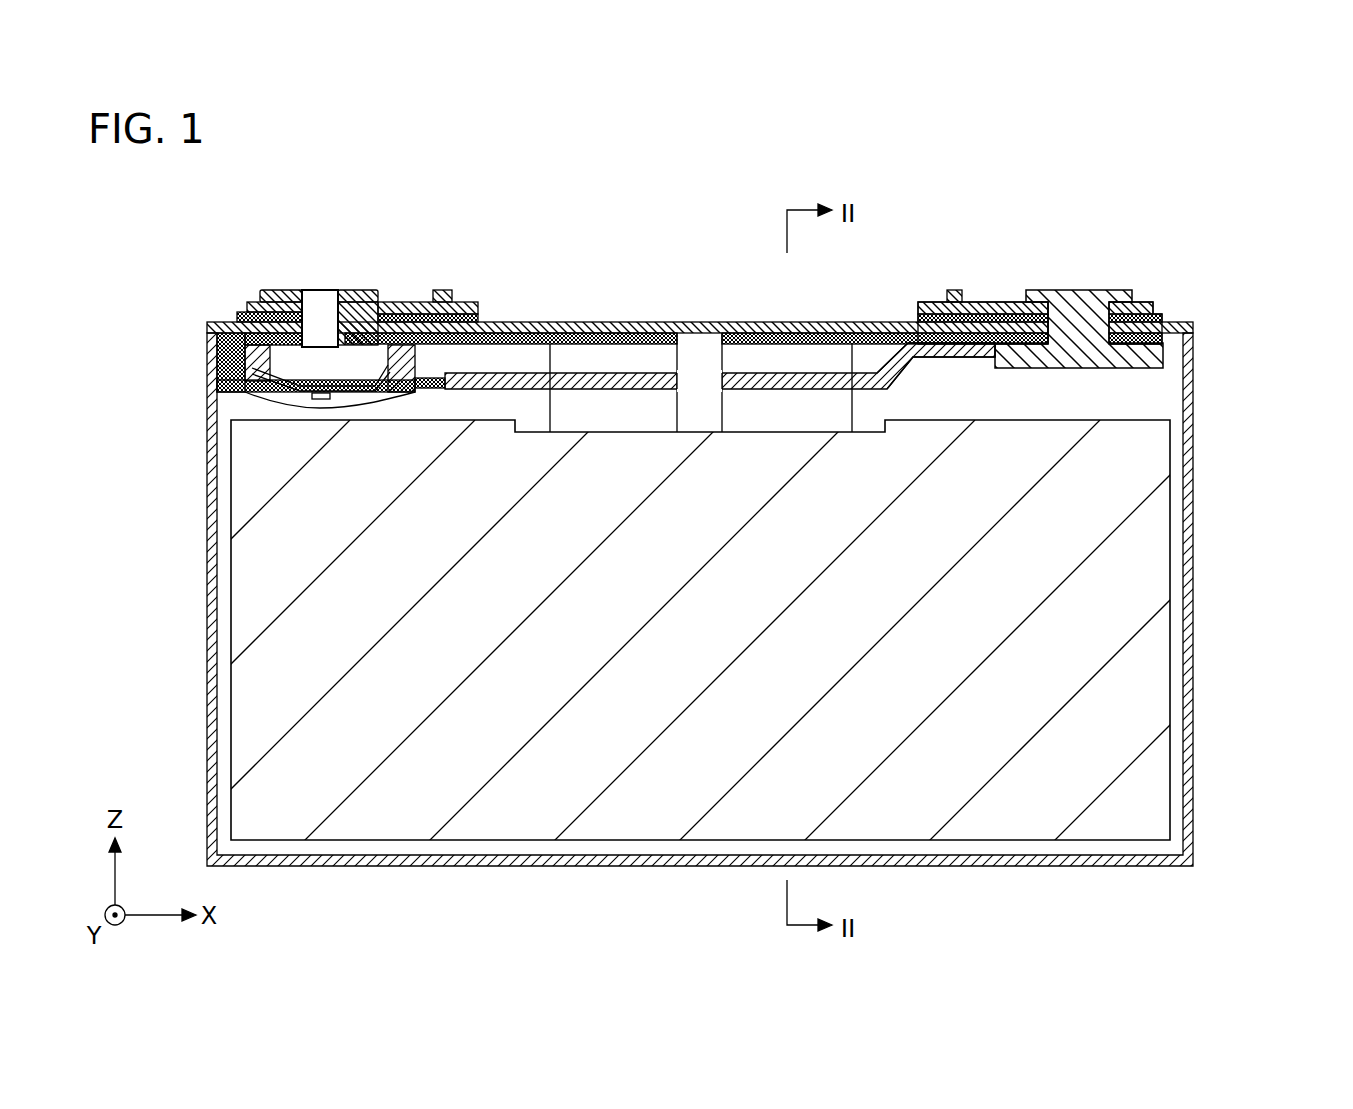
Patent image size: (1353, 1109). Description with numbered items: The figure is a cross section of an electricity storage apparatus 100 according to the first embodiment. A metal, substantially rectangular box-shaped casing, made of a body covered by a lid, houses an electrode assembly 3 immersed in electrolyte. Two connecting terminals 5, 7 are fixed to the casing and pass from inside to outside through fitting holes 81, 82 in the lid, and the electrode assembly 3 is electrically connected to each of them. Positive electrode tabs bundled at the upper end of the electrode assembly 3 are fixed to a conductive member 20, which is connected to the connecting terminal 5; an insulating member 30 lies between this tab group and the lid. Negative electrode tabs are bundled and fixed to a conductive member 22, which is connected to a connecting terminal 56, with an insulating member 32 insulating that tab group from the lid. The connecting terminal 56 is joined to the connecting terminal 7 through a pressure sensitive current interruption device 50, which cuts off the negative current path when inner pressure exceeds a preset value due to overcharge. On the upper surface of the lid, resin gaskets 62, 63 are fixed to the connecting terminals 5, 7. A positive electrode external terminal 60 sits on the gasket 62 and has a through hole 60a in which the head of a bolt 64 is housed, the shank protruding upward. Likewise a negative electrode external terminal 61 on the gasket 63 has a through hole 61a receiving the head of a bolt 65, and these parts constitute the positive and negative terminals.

The electricity storage apparatus 100 is at (983, 142).
The electrode assembly 3 is at (1110, 712).
The connecting terminal 5 is at (1108, 281).
The connecting terminal 7 is at (308, 288).
The conductive member 20 is at (880, 362).
The conductive member 22 is at (520, 383).
The insulating member 30 is at (823, 332).
The insulating member 32 is at (570, 330).
The current interruption device 50 is at (265, 403).
The connecting terminal 56 is at (435, 375).
The positive electrode external terminal 60 is at (980, 302).
The through hole 60a is at (950, 300).
The negative electrode external terminal 61 is at (412, 303).
The through hole 61a is at (453, 303).
The gasket 62 is at (1013, 302).
The gasket 63 is at (393, 302).
The bolt 64 is at (960, 302).
The bolt 65 is at (440, 302).
The fitting hole 81 is at (1080, 300).
The fitting hole 82 is at (292, 300).